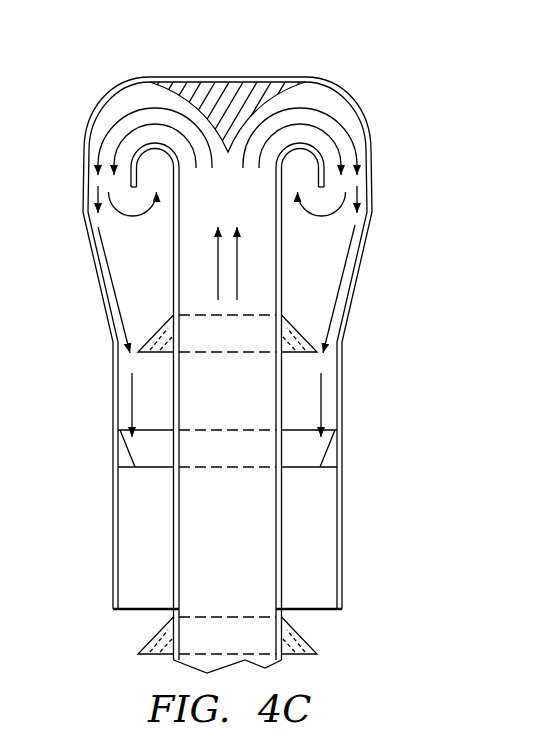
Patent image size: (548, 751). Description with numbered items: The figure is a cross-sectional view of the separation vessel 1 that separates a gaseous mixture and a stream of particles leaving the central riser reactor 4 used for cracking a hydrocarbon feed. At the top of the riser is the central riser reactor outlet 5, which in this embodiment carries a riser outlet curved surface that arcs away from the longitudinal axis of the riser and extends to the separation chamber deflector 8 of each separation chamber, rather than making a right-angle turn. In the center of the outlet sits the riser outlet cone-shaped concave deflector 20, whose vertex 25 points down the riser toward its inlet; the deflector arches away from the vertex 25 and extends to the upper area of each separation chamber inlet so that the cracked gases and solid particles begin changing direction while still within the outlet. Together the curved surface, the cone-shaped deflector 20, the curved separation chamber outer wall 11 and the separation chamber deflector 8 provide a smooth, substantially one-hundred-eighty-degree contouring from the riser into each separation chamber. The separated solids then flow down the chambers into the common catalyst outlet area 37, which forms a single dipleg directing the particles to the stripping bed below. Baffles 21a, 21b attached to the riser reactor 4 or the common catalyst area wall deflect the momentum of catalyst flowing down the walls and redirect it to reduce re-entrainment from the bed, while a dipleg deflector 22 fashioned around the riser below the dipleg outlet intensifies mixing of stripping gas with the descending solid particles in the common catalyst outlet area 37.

The separation vessel 1 is at (353, 357).
The central riser reactor 4 is at (238, 516).
The central riser reactor outlet 5 is at (227, 178).
The separation chamber deflector 8 is at (326, 181).
The separation chamber outer wall 11 is at (84, 257).
The riser outlet cone-shaped concave deflector 20 is at (230, 100).
The baffle 21a is at (127, 455).
The baffle 21b is at (158, 332).
The dipleg deflector 22 is at (152, 642).
The vertex 25 is at (236, 151).
The common catalyst outlet area 37 is at (306, 532).